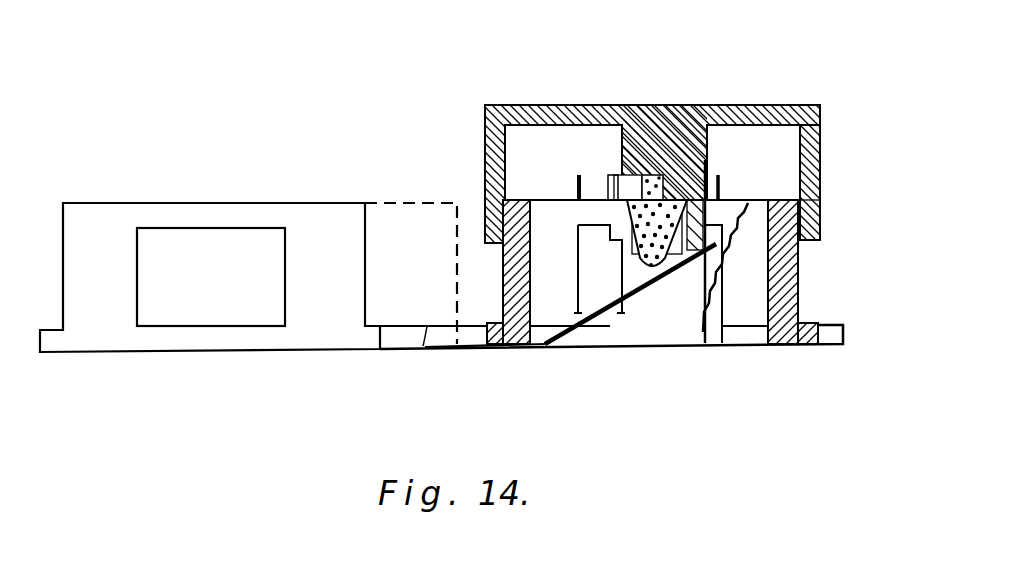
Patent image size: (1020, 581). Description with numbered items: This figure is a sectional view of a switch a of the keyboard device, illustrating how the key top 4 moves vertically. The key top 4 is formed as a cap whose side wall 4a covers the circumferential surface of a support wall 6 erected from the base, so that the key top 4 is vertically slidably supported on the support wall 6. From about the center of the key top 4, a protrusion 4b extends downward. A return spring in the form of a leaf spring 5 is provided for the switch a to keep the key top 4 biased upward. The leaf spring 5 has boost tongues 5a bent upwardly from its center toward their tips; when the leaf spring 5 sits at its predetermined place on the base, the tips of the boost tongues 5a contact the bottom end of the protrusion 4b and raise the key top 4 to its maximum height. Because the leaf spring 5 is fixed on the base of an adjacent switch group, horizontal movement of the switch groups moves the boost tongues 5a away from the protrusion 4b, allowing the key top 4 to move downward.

The switch a is at (613, 105).
The key top 4 is at (755, 105).
The side wall 4a is at (820, 143).
The protrusion 4b is at (693, 346).
The leaf spring 5 is at (563, 346).
The boost tongues 5a is at (643, 346).
The support wall 6 is at (800, 272).